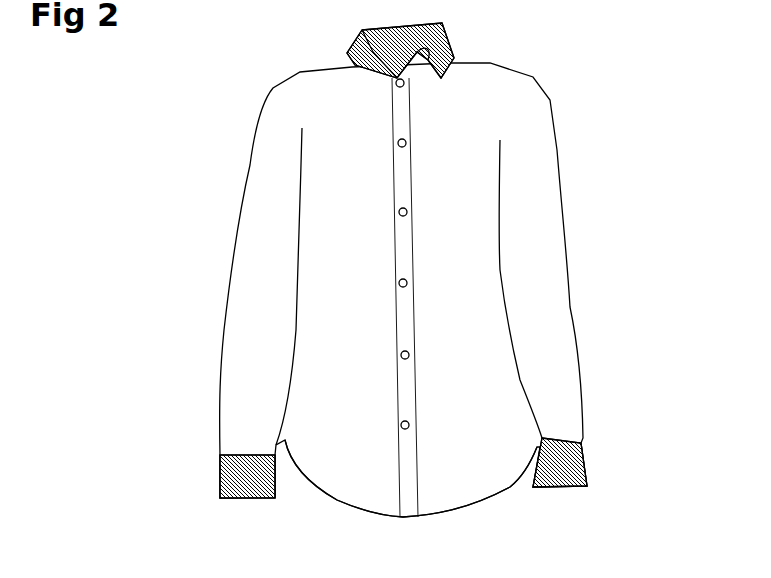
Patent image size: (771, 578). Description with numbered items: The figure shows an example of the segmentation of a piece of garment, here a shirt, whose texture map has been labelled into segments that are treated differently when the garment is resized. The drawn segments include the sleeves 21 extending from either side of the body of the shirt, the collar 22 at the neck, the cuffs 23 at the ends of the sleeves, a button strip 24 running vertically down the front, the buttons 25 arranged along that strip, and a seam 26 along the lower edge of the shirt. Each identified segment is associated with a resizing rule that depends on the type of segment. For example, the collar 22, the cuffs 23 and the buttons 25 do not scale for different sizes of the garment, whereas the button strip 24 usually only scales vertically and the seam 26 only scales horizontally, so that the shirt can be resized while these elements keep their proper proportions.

The sleeves 21 is at (537, 292).
The collar 22 is at (347, 50).
The cuffs 23 is at (575, 463).
The button strip 24 is at (410, 258).
The buttons 25 is at (409, 425).
The seam 26 is at (442, 517).